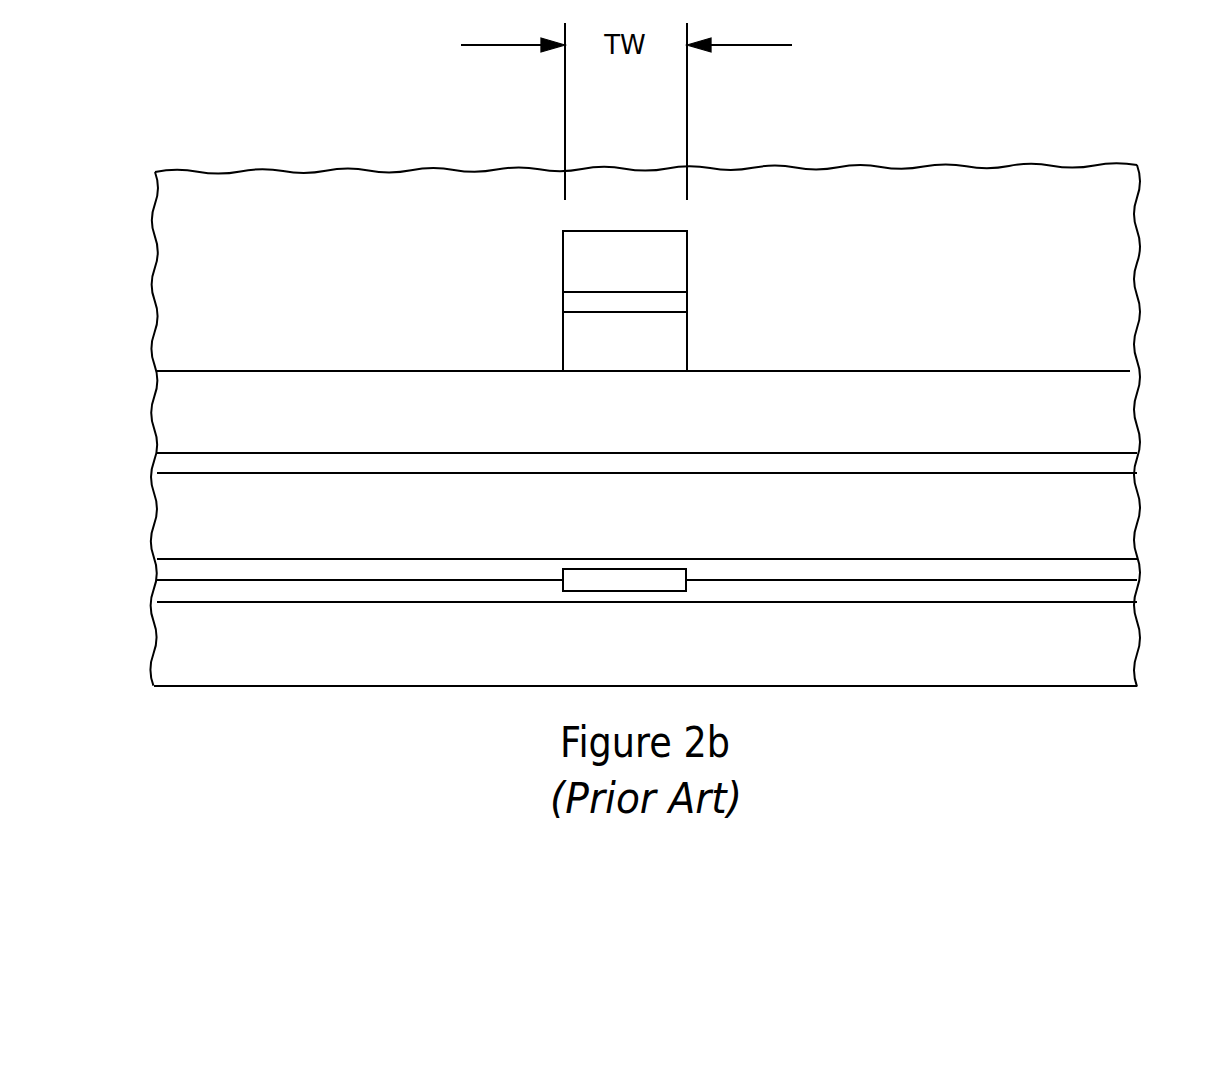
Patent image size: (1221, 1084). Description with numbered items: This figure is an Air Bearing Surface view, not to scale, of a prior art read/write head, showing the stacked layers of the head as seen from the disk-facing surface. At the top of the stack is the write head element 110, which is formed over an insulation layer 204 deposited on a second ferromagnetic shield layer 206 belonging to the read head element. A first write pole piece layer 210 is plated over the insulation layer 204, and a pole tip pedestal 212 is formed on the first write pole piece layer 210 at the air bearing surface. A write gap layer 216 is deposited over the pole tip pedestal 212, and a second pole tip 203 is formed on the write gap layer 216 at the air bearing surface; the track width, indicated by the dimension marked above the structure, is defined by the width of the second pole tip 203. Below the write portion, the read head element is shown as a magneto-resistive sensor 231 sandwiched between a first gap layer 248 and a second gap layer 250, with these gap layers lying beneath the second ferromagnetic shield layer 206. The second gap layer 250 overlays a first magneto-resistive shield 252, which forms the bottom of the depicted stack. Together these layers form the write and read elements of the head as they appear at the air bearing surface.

The write head element 110 is at (823, 778).
The second pole tip (P2) 203 is at (690, 258).
The write gap layer 216 is at (690, 304).
The Pole Tip Pedestal (PTP) 212 is at (690, 339).
The first write pole piece (P1) layer 210 is at (1141, 410).
The insulation layer 204 is at (1141, 462).
The second ferromagnetic shield layer (S2) 206 is at (1138, 512).
The first gap layer 248 is at (1138, 565).
The second gap layer 250 is at (1138, 591).
The first MR shield (S1) 252 is at (1138, 636).
The Magneto-Resistive (MR) sensor 231 is at (668, 591).